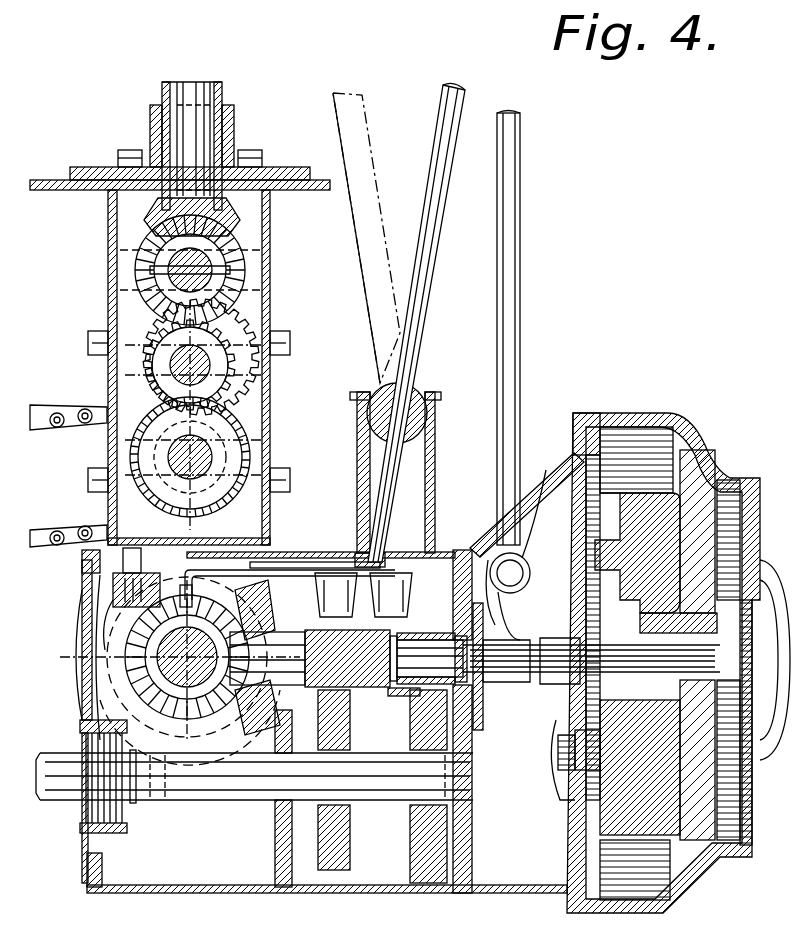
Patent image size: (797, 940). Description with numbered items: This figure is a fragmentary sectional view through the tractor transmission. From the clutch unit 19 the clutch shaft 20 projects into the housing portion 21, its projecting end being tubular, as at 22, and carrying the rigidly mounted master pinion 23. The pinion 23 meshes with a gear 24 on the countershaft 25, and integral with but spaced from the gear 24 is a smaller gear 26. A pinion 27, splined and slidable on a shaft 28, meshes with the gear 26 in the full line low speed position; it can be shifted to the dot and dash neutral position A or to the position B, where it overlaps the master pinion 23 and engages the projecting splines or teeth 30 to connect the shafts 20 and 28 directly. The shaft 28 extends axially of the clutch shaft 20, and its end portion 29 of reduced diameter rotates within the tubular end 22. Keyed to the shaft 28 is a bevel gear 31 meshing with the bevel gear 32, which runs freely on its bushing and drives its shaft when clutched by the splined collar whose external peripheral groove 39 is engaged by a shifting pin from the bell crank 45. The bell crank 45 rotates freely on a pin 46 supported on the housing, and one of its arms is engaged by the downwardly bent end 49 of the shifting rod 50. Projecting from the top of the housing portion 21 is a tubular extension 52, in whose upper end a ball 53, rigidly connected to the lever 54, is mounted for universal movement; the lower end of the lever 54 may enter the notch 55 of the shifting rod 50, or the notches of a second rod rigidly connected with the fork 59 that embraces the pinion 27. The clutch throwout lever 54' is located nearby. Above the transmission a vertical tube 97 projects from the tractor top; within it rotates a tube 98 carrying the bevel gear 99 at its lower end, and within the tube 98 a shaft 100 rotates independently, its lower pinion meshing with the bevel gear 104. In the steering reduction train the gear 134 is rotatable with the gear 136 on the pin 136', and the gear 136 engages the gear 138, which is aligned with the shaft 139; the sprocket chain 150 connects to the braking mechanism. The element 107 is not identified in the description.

The clutch unit 19 is at (645, 413).
The clutch shaft 20 is at (497, 674).
The housing portion 21 is at (458, 552).
The tubular portion 22 is at (414, 630).
The master pinion 23 is at (436, 640).
The gear 24 is at (410, 852).
The countershaft 25 is at (254, 776).
The smaller gear 26 is at (333, 870).
The pinion 27 is at (330, 562).
The shaft 28 is at (351, 658).
The end portion of reduced diameter 29 is at (430, 658).
The projecting splines or teeth 30 is at (397, 697).
The bevel gear 31 is at (244, 722).
The bevel gear 32 is at (176, 722).
The external peripheral groove 39 is at (143, 708).
The bell crank 45 is at (105, 612).
The pin 46 is at (113, 598).
The downwardly bent end 49 is at (188, 562).
The shifting rod 50 is at (284, 552).
The tubular extension 52 is at (436, 481).
The ball 53 is at (428, 421).
The lever 54 is at (399, 322).
The clutch throwout lever 54' is at (535, 328).
The notch 55 is at (362, 552).
The fork 59 is at (303, 568).
The vertical tube 97 is at (224, 96).
The tube 98 is at (173, 100).
The bevel gear 99 is at (248, 226).
The shaft 100 is at (190, 90).
The bevel gear 104 is at (246, 270).
The cross shaft 107 is at (150, 269).
The gear 134 is at (228, 336).
The gear 136 is at (190, 365).
The pin 136' is at (139, 373).
The gear 138 is at (242, 436).
The shaft 139 is at (190, 457).
The sprocket chain 150 is at (72, 432).
The neutral position A is at (371, 721).
The position B is at (363, 595).